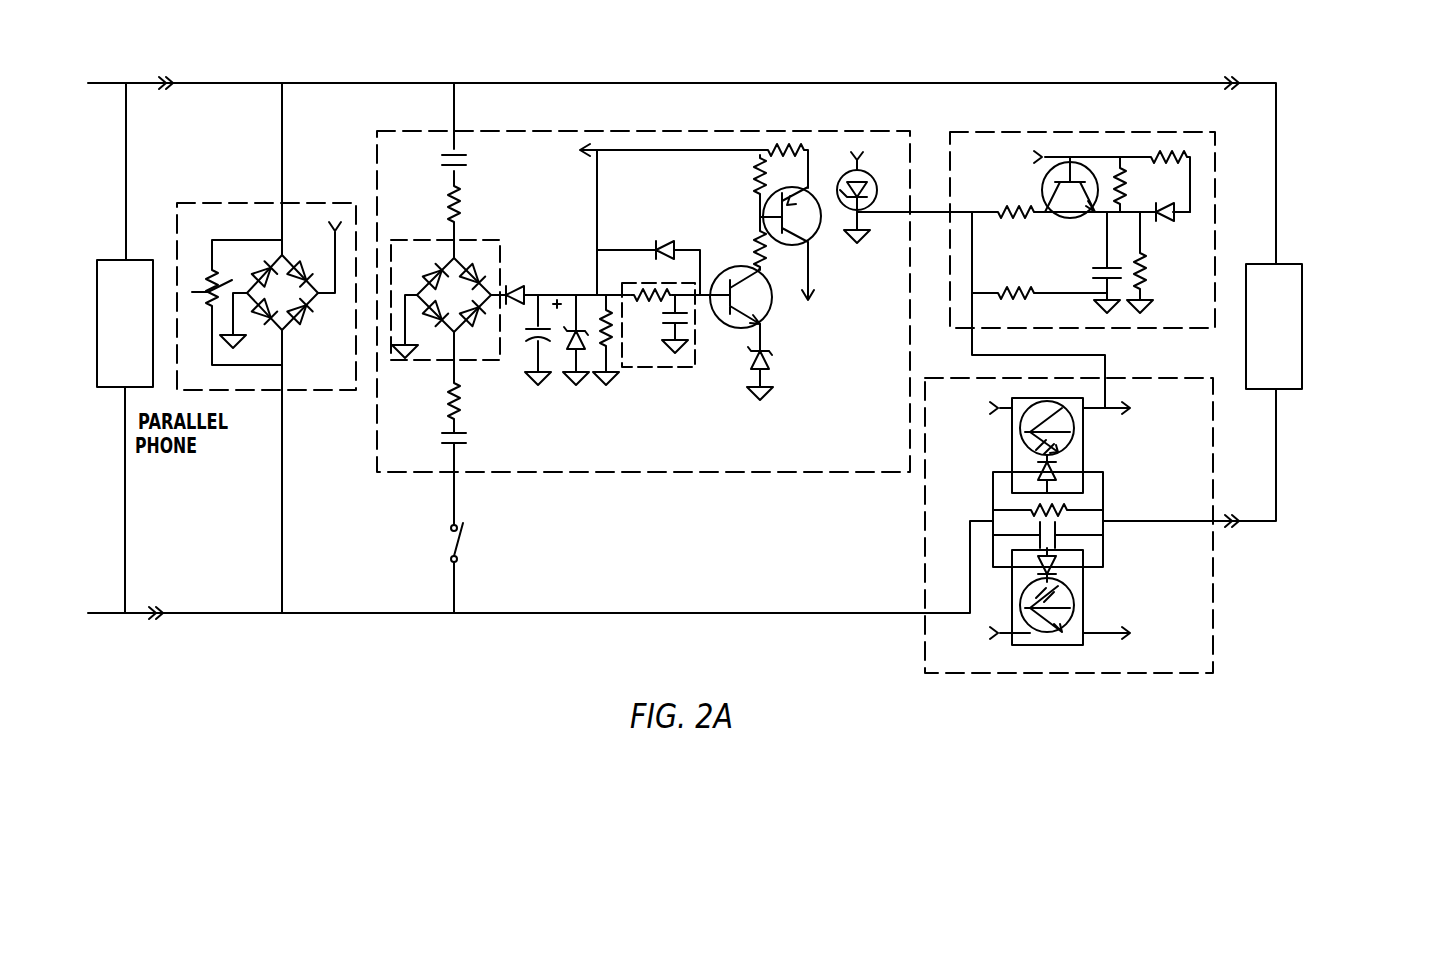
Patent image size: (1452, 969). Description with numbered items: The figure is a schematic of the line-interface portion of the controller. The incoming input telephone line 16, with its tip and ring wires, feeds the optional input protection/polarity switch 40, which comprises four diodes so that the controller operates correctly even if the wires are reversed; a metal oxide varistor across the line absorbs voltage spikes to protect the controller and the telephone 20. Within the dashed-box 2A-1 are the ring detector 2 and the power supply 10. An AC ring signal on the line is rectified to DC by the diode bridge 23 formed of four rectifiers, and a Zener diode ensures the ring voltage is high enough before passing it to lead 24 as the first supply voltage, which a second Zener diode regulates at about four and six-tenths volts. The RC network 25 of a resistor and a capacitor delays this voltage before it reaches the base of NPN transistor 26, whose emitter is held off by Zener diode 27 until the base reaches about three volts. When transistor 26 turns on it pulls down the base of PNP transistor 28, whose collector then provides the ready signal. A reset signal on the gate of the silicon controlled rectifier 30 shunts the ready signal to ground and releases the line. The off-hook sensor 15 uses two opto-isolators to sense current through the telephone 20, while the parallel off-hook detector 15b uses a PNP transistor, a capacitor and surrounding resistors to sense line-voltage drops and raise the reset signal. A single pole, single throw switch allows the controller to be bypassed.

The input protection/polarity switch 40 is at (298, 202).
The input telephone line 16 is at (226, 613).
The dashed-box 2A-1 is at (490, 133).
The ring detector 2 is at (531, 348).
The power supply 10 is at (743, 303).
The diode bridge 23 is at (425, 355).
The lead 24 is at (530, 293).
The RC network 25 is at (654, 358).
The NPN transistor 26 is at (733, 324).
The Zener diode 27 is at (770, 360).
The PNP transistor 28 is at (788, 228).
The silicon controlled rectifier 30 is at (872, 182).
The off-hook detector 15b is at (1040, 132).
The off-hook sensor 15 is at (925, 578).
The telephone 20 is at (1302, 345).